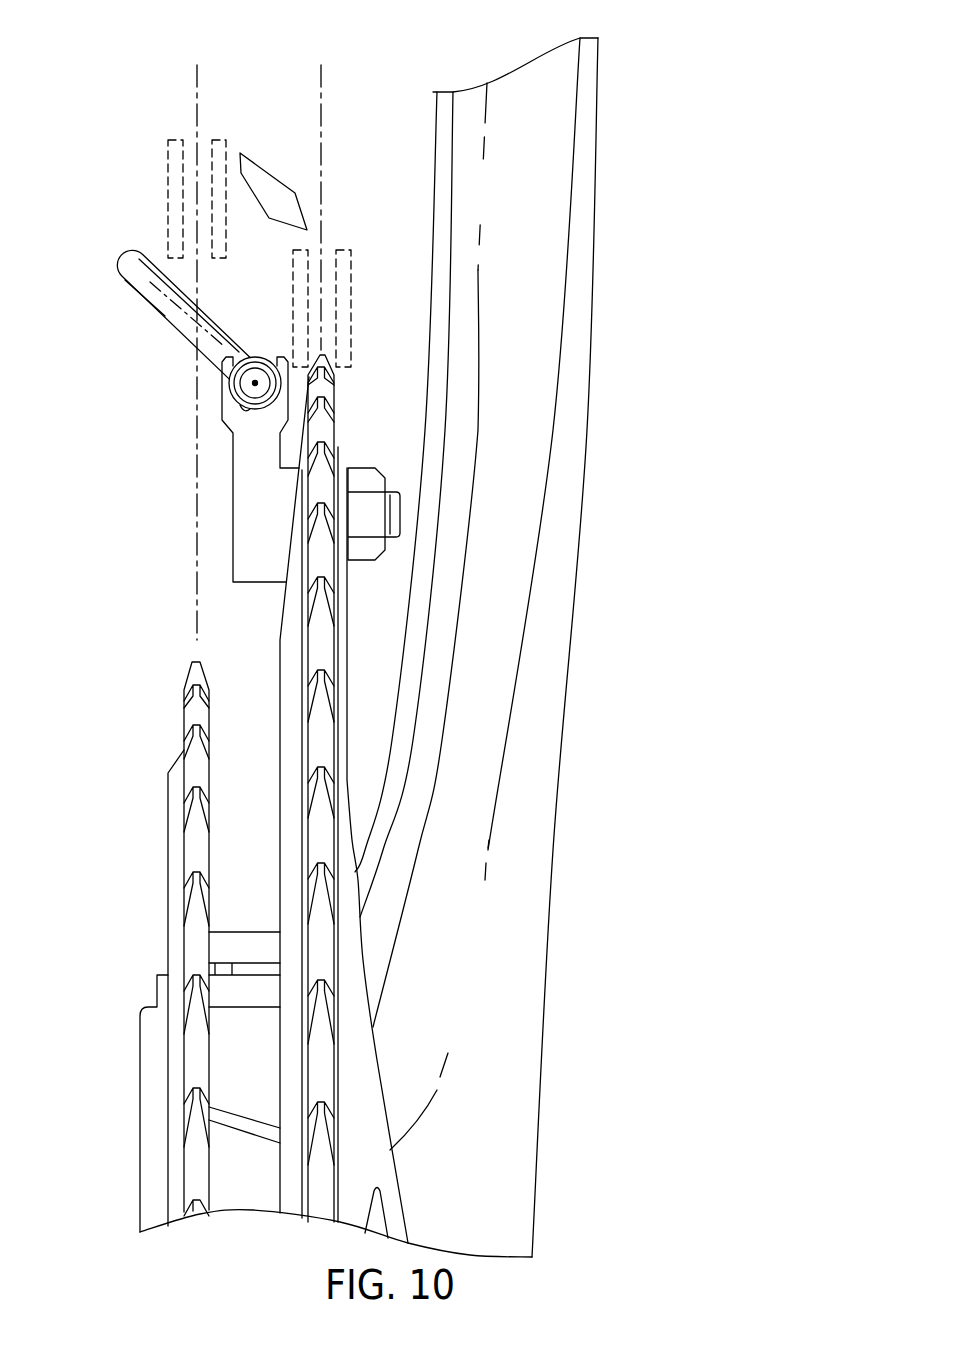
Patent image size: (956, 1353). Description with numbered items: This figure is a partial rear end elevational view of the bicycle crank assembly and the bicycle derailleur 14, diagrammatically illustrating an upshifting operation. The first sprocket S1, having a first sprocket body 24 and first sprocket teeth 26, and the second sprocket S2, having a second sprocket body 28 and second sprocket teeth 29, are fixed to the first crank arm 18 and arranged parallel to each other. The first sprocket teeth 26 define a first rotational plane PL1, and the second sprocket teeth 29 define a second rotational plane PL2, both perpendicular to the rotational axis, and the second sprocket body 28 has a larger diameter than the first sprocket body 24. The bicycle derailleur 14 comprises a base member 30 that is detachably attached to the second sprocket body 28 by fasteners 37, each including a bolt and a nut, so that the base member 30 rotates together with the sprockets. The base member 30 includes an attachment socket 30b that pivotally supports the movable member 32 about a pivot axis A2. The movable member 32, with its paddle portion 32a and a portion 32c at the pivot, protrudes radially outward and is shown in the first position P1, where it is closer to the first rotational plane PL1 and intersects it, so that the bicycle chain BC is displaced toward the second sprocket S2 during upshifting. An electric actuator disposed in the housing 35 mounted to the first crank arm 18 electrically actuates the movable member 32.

The first crank arm 18 is at (603, 182).
The second sprocket body 28 is at (363, 951).
The second sprocket teeth 29 is at (317, 776).
The second sprocket S2 is at (340, 405).
The first sprocket teeth 26 is at (192, 796).
The first sprocket S1 is at (180, 728).
The first sprocket body 24 is at (168, 921).
The housing 35 is at (135, 1060).
The base member 30 is at (248, 586).
The attachment socket 30b is at (233, 400).
The pivot axis A2 is at (255, 381).
The lever pivot portion 32c is at (245, 417).
The movable member 32 is at (118, 252).
The paddle portion 32a is at (177, 336).
The first position P1 is at (160, 316).
The bicycle derailleur 14 is at (205, 429).
The first rotational plane PL1 is at (197, 80).
The second rotational plane PL2 is at (323, 97).
The bicycle chain BC is at (168, 163).
The fasteners 37 is at (400, 482).